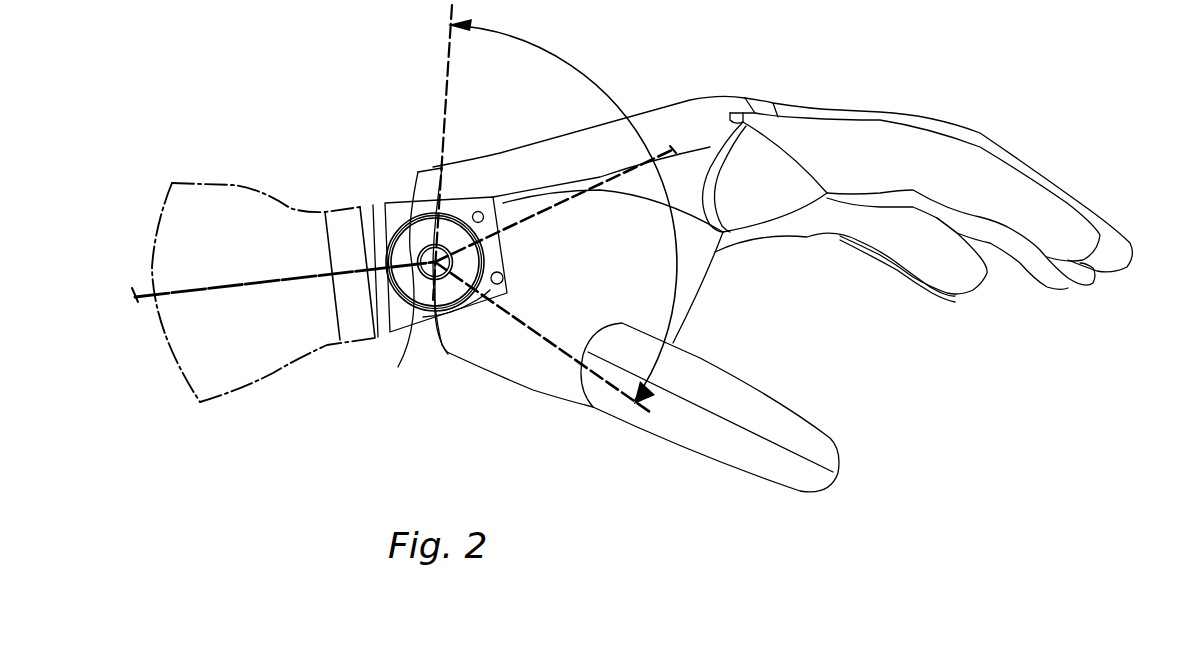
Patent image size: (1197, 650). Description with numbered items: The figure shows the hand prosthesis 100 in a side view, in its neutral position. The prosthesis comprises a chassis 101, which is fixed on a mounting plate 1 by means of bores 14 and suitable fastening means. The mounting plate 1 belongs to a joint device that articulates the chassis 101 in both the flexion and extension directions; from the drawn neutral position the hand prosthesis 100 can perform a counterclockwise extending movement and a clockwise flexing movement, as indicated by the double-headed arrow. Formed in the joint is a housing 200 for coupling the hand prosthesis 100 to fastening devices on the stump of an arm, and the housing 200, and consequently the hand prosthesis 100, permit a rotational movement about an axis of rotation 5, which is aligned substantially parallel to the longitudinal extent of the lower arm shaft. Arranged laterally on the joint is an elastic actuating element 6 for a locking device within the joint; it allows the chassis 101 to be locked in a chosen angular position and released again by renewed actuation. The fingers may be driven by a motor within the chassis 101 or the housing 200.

The hand prosthesis 100 is at (800, 64).
The chassis 101 is at (625, 143).
The housing 200 is at (388, 210).
The axis of rotation 5 is at (276, 272).
The mounting plate 1 is at (503, 258).
The elastic actuating element 6 is at (410, 280).
The bores 14 is at (504, 278).